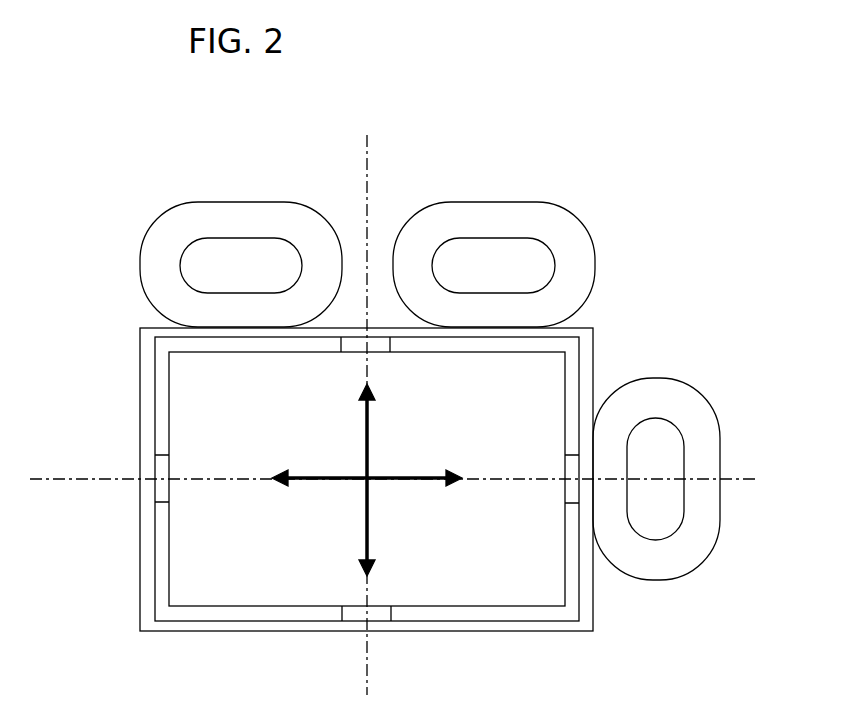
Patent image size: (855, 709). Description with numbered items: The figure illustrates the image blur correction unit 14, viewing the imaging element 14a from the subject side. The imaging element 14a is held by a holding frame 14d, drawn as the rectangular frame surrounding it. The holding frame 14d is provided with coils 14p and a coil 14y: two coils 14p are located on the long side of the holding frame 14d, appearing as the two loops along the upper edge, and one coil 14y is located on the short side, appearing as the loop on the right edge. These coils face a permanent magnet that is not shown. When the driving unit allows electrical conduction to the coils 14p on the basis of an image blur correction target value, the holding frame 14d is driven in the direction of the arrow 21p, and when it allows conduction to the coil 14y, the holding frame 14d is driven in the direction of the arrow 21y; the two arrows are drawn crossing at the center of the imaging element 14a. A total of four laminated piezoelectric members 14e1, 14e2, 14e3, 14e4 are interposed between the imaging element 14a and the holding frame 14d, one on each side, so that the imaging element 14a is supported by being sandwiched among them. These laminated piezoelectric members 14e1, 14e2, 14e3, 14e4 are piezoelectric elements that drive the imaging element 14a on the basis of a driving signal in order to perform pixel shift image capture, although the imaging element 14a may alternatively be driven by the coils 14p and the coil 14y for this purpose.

The image blur correction unit 14 is at (641, 170).
The imaging element 14a is at (495, 587).
The holding frame 14d is at (240, 623).
The laminated piezoelectric member 14e1 is at (352, 616).
The laminated piezoelectric member 14e2 is at (162, 496).
The laminated piezoelectric member 14e3 is at (361, 337).
The laminated piezoelectric member 14e4 is at (572, 468).
The coils 14p is at (238, 202).
The coil 14y is at (720, 430).
The arrow 21p is at (370, 428).
The arrow 21y is at (305, 477).